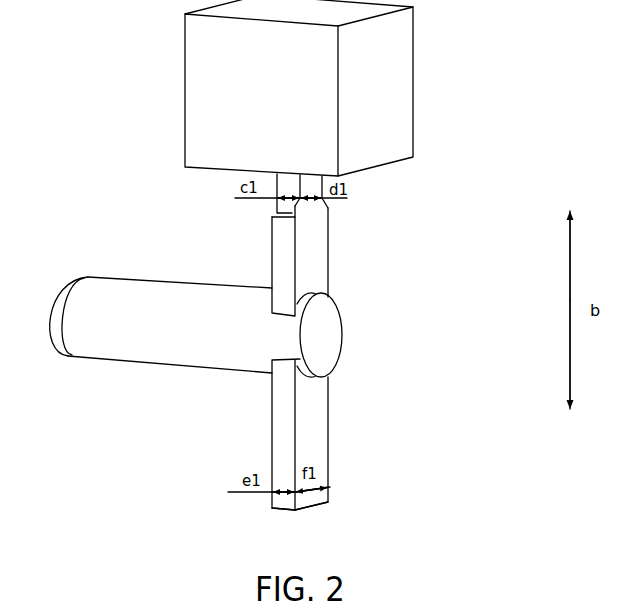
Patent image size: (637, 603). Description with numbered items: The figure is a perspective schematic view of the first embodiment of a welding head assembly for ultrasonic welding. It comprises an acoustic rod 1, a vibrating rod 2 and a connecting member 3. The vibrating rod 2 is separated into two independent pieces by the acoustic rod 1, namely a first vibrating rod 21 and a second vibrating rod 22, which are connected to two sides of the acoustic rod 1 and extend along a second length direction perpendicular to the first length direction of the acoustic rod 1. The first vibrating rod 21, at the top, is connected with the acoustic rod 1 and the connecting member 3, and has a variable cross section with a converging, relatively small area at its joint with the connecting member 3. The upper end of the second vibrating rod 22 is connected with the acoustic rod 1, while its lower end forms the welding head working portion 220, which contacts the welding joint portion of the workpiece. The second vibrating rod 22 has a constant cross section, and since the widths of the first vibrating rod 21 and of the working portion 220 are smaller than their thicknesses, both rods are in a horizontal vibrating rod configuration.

The acoustic rod 1 is at (143, 298).
The vibrating rod 2 is at (380, 371).
The connecting member 3 is at (368, 88).
The first vibrating rod 21 is at (317, 262).
The second vibrating rod 22 is at (313, 419).
The welding head working portion 220 is at (319, 512).